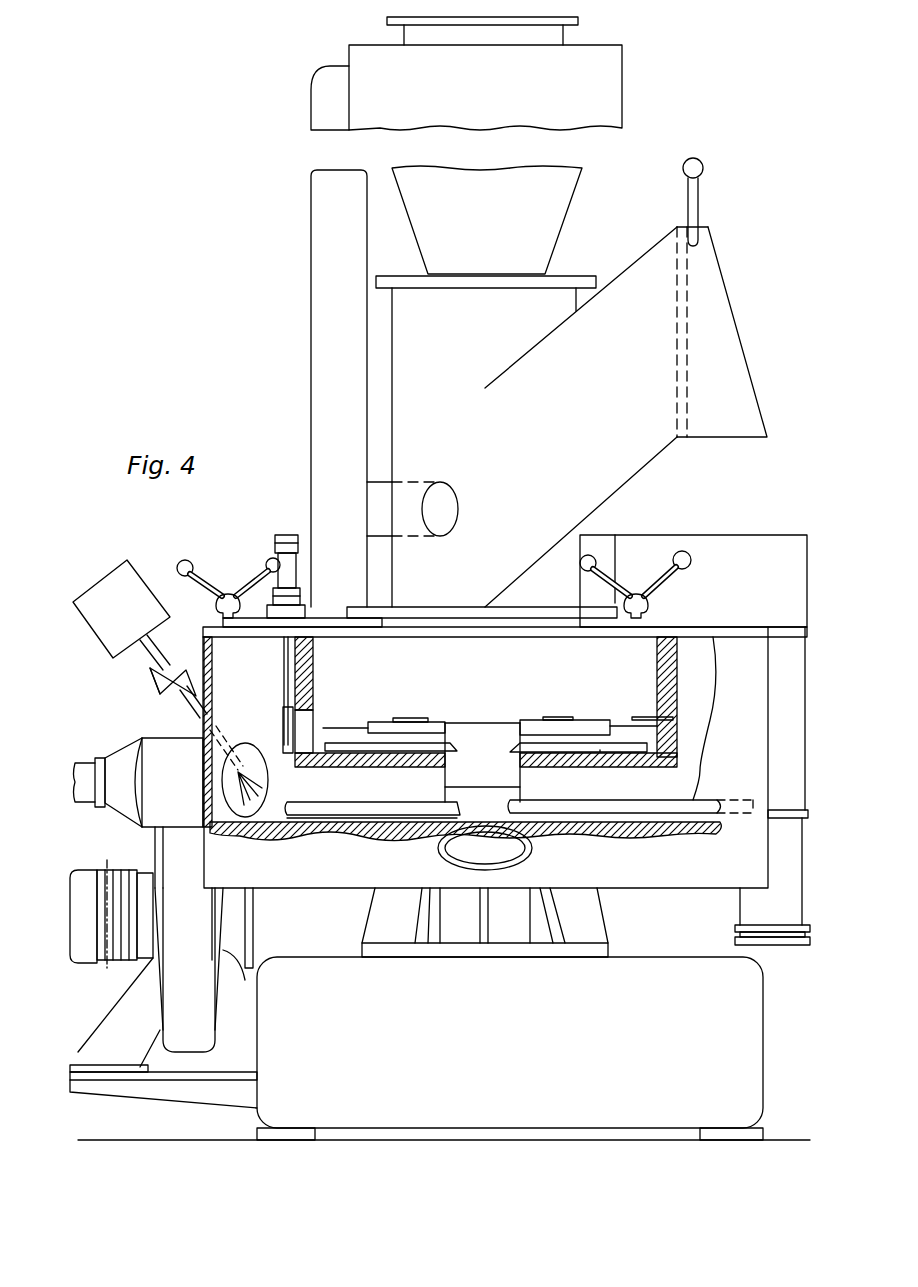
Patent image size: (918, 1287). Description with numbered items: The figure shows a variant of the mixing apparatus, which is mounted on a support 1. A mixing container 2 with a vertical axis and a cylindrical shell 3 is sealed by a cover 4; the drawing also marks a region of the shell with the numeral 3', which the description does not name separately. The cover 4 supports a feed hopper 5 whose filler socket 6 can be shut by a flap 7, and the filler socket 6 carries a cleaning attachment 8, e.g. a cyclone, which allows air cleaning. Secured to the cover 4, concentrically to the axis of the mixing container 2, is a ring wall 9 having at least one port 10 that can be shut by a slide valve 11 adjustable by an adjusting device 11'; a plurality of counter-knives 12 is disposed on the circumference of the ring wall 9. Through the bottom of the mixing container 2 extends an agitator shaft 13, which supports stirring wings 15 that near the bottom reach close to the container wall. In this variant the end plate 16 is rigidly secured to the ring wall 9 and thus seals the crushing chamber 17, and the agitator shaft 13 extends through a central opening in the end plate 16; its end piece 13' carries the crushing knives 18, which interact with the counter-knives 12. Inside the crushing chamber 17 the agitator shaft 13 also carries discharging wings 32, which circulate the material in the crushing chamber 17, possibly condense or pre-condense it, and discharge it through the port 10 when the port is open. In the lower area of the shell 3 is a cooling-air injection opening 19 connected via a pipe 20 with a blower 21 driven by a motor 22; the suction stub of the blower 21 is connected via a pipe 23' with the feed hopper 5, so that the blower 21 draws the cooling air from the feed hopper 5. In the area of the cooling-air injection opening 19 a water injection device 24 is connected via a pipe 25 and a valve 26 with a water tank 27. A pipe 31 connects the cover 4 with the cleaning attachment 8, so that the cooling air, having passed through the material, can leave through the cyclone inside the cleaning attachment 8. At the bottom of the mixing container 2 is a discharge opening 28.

The support 1 is at (716, 1054).
The mixing container 2 is at (668, 872).
The cylindrical shell 3 is at (722, 718).
The housing wall extension 3' is at (699, 794).
The cover 4 is at (270, 632).
The feed hopper 5 is at (594, 458).
The filler socket 6 is at (735, 371).
The flap 7 is at (677, 343).
The cleaning attachment 8 is at (498, 228).
The ring wall 9 is at (672, 694).
The port 10 is at (305, 722).
The slide valve 11 is at (268, 695).
The adjusting device 11' is at (274, 559).
The counter-knives 12 is at (410, 718).
The agitator shaft 13 is at (509, 787).
The end piece 13' is at (480, 741).
The stirring wings 15 is at (360, 805).
The end plate 16 is at (416, 766).
The crushing chamber 17 is at (542, 686).
The crushing knives 18 is at (352, 728).
The cooling-air injection opening 19 is at (263, 768).
The pipe 20 is at (180, 791).
The blower 21 is at (198, 958).
The motor 22 is at (115, 962).
The pipe 23' is at (412, 484).
The water injection device 24 is at (240, 767).
The pipe 25 is at (196, 724).
The valve 26 is at (160, 688).
The water tank 27 is at (110, 627).
The discharge opening 28 is at (500, 857).
The pipe 31 is at (326, 312).
The discharging wings 32 is at (600, 752).